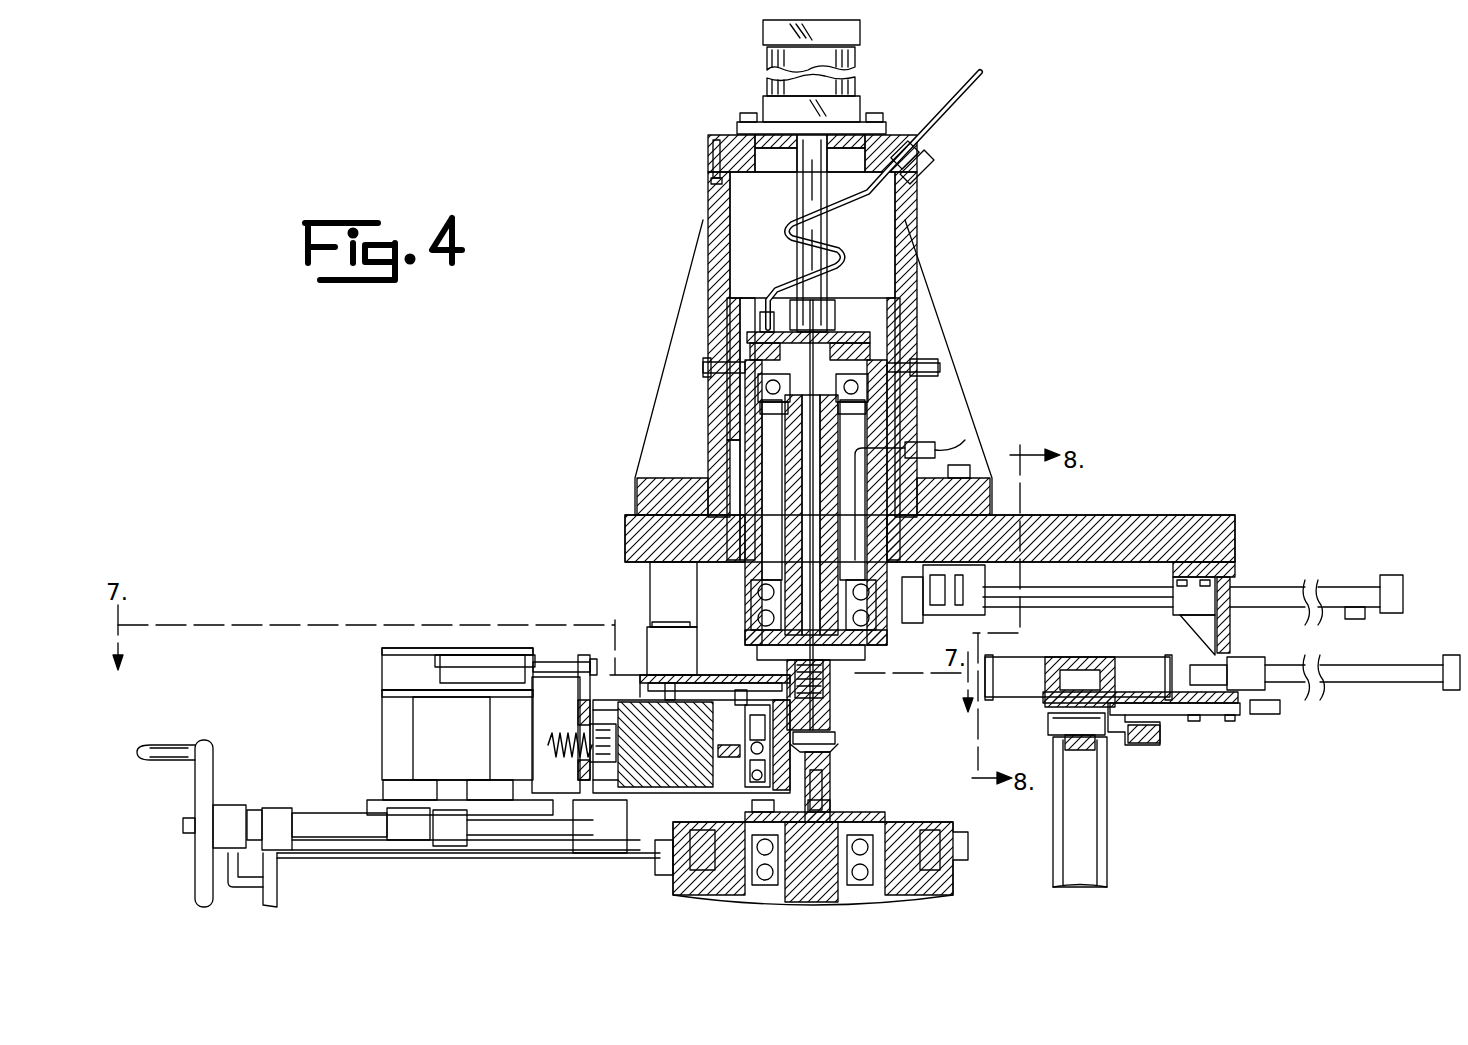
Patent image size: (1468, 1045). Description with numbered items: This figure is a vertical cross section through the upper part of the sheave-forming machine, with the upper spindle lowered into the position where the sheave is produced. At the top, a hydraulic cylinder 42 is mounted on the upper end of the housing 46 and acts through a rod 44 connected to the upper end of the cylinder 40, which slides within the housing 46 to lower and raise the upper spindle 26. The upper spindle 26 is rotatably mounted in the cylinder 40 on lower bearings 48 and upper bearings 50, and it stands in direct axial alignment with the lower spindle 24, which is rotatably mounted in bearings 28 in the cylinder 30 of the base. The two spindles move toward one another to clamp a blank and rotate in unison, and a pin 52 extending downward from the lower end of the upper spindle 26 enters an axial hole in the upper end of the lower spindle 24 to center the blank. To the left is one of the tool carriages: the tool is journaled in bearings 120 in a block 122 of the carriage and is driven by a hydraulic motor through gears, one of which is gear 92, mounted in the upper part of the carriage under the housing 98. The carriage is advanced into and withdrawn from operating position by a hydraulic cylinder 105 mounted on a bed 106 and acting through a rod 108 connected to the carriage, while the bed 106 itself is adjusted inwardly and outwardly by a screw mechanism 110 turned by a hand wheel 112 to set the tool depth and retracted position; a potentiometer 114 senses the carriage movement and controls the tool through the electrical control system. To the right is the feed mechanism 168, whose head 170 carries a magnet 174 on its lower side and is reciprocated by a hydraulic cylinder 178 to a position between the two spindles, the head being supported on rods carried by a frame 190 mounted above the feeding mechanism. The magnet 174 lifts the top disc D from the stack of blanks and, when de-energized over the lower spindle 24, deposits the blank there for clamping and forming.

The hydraulic cylinder 42 is at (861, 52).
The rod 44 is at (812, 198).
The housing 46 is at (910, 263).
The upper bearings 50 is at (765, 390).
The cylinder 40 is at (873, 432).
The lower bearings 48 is at (766, 590).
The frame 190 is at (1120, 532).
The gear 92 is at (660, 640).
The housing 98 is at (710, 676).
The upper spindle 26 is at (831, 708).
The pin 52 is at (1108, 822).
The lower spindle 24 is at (834, 780).
The bearing 28 is at (872, 830).
The cylinder 30 is at (958, 887).
The block 122 is at (684, 782).
The bearings 120 is at (746, 782).
The hydraulic cylinder 105 is at (470, 742).
The bed 106 is at (380, 795).
The potentiometer 114 is at (510, 641).
The rod 108 is at (545, 730).
The screw mechanism 110 is at (313, 818).
The hand wheel 112 is at (210, 740).
The head 170 is at (1045, 662).
The hydraulic cylinder 178 is at (1408, 686).
The feed mechanism 168 is at (1253, 760).
The magnet 174 is at (1097, 727).
The disc D is at (1060, 743).